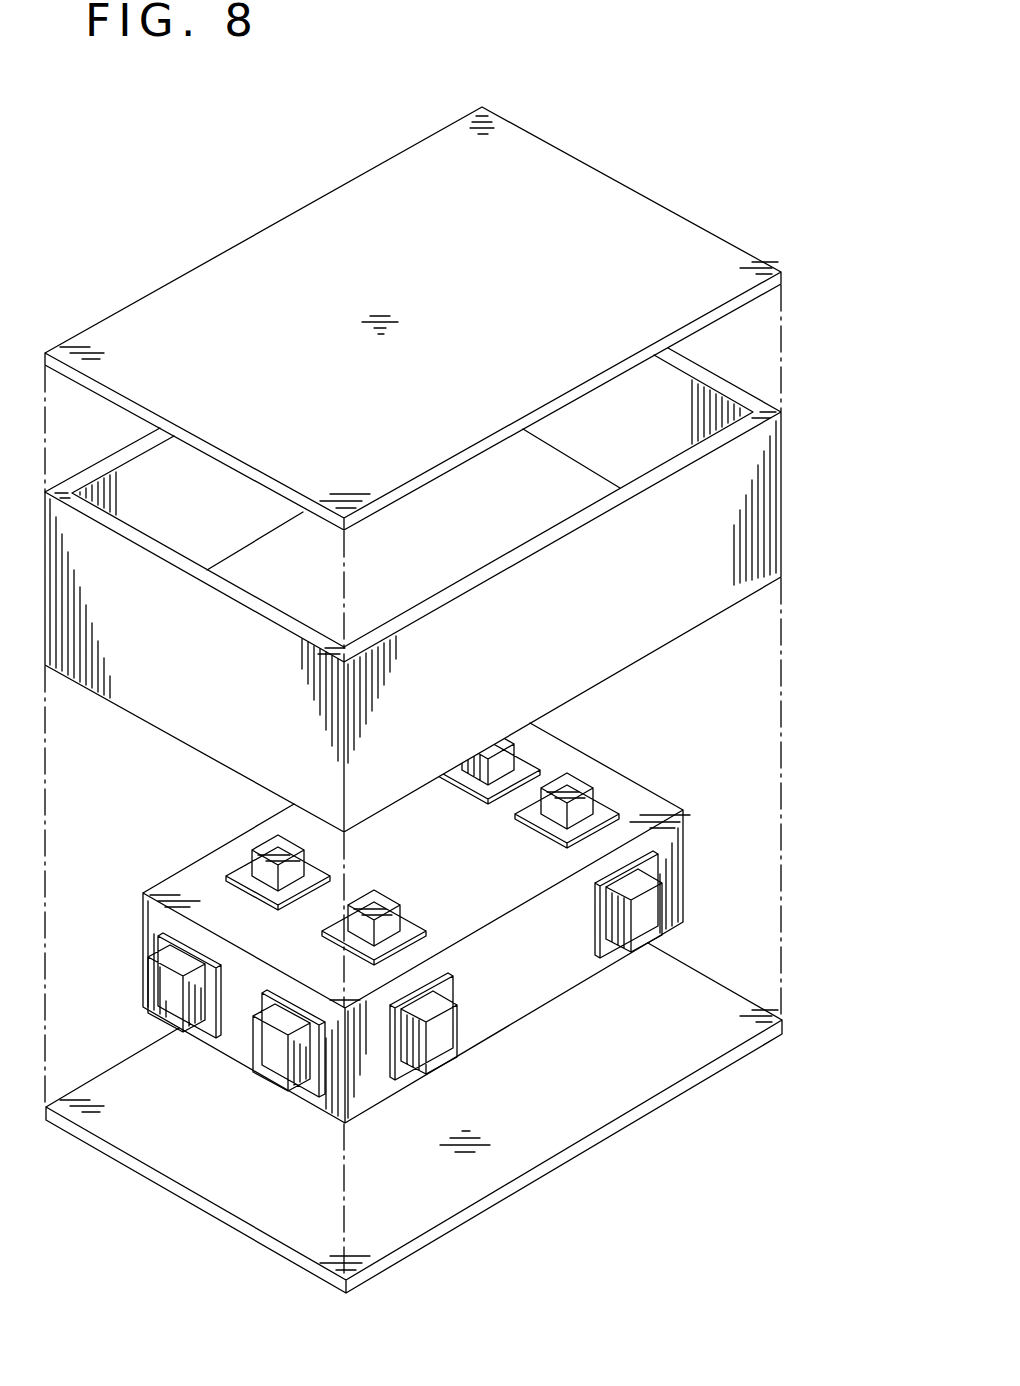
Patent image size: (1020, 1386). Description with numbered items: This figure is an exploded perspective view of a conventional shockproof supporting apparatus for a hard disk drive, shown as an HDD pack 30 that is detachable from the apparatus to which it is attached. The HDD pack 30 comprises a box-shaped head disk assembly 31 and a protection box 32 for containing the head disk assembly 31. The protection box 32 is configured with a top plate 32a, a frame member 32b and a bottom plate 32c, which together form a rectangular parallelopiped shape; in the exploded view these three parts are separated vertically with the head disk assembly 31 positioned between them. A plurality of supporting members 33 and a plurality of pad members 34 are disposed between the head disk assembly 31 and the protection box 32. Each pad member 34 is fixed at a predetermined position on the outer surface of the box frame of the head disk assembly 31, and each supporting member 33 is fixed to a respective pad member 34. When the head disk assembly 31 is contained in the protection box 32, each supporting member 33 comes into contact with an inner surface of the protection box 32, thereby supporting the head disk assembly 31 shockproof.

The HDD pack 30 is at (805, 310).
The head disk assembly 31 is at (419, 923).
The protection box 32 is at (460, 700).
The top plate 32a is at (676, 227).
The frame member 32b is at (645, 622).
The bottom plate 32c is at (704, 1069).
The supporting members 33 is at (672, 905).
The pad members 34 is at (608, 800).